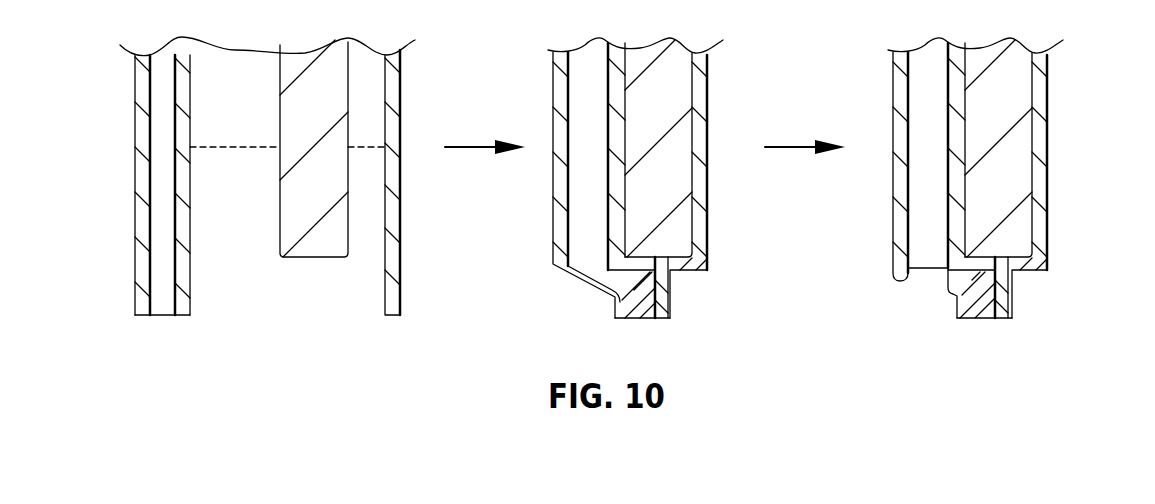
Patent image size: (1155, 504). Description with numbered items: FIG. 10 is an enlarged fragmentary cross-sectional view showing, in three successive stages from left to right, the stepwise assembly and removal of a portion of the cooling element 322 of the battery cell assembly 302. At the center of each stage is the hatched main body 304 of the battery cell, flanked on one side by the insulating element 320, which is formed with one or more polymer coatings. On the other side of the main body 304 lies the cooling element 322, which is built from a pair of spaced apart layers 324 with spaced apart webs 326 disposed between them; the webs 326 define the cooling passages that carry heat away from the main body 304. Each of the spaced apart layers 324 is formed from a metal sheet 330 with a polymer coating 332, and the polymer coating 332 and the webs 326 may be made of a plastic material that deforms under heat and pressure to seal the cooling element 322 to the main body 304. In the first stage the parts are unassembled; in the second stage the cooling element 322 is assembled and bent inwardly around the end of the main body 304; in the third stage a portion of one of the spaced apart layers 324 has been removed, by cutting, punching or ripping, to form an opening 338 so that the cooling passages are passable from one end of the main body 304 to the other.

The battery cell assembly 302 is at (436, 68).
The main body 304 is at (330, 115).
The insulating element 320 is at (405, 107).
The cooling element 322 is at (132, 99).
The spaced apart layers 324 is at (180, 197).
The webs 326 is at (160, 147).
The metal sheet 330 is at (145, 318).
The polymer coating 332 is at (136, 241).
The opening 338 is at (923, 274).